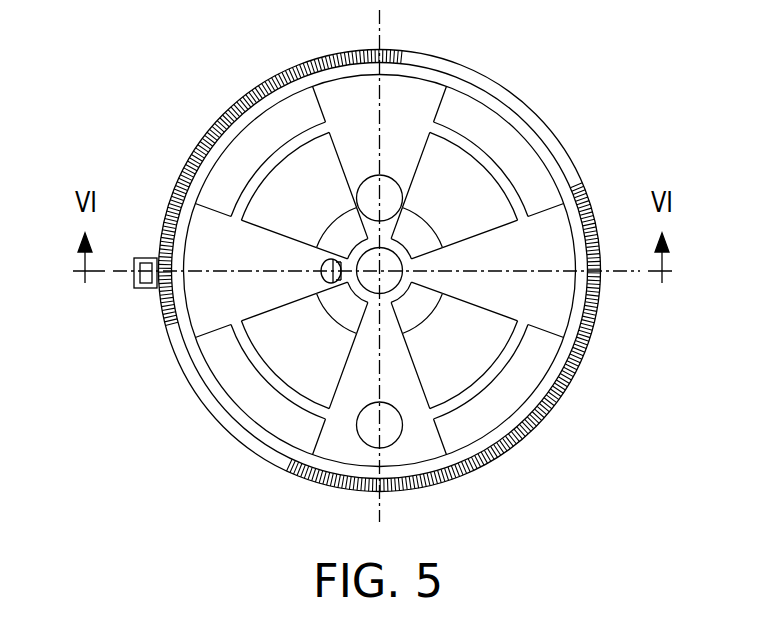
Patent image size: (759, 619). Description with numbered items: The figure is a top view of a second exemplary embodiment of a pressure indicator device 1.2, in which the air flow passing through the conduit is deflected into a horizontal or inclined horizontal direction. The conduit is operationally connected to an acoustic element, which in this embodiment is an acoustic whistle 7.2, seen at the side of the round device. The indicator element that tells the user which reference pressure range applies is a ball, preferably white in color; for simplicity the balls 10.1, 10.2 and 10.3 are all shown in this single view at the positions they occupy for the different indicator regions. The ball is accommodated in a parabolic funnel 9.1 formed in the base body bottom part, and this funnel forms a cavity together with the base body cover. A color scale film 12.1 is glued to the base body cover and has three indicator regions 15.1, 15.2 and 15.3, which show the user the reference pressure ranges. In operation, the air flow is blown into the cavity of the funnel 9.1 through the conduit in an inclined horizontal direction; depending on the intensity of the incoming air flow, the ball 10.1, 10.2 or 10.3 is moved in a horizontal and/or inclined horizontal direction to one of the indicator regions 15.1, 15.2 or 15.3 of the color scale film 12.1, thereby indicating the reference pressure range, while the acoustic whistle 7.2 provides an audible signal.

The pressure indicator device 1.2 is at (182, 419).
The acoustic whistle 7.2 is at (142, 288).
The parabolic funnel 9.1 is at (218, 237).
The ball 10.1 is at (393, 265).
The ball 10.2 is at (392, 185).
The ball 10.3 is at (388, 433).
The color scale film 12.1 is at (512, 313).
The indicator region 15.1 is at (348, 228).
The indicator region 15.2 is at (287, 173).
The indicator region 15.3 is at (242, 163).